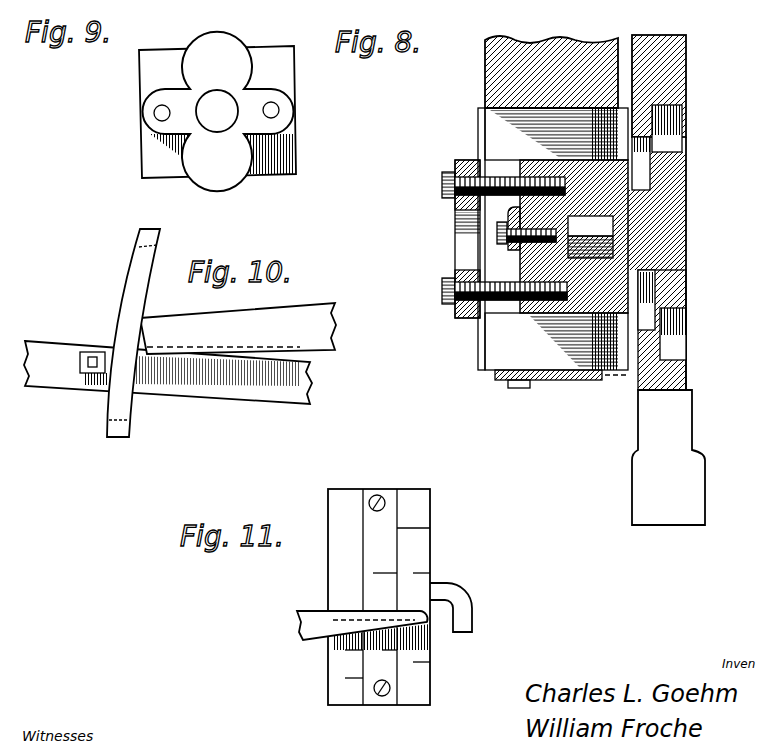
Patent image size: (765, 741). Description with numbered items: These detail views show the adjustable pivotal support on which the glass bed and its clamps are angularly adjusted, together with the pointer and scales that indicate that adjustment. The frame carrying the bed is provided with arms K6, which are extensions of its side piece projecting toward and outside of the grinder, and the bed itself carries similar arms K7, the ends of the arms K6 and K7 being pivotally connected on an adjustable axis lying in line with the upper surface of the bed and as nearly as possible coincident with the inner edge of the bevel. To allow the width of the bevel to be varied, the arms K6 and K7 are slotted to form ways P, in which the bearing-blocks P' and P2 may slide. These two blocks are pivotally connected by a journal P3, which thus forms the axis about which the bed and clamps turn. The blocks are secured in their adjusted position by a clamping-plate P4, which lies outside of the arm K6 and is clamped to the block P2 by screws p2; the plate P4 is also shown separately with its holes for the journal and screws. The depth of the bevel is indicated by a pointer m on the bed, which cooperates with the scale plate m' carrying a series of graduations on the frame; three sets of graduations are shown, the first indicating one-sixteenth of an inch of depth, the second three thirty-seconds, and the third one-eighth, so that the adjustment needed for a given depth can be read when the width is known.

In FIG. 8, the arms K6 is at (540, 22).
In FIG. 8, the arms K7 is at (668, 90).
In FIG. 8, the ways P is at (681, 128).
In FIG. 9, the bearing-block P2 is at (217, 112).
In FIG. 8, the bearing-block P2 is at (597, 177).
In FIG. 8, the bearing-block P' is at (673, 211).
In FIG. 8, the journal P3 is at (613, 242).
In FIG. 8, the clamping-plate P4 is at (456, 240).
In FIG. 8, the screws p2 is at (497, 170).
In FIG. 10, the pointer m is at (168, 349).
In FIG. 11, the pointer m is at (356, 614).
In FIG. 10, the gauge plate m' is at (149, 323).
In FIG. 11, the gauge plate m' is at (400, 576).